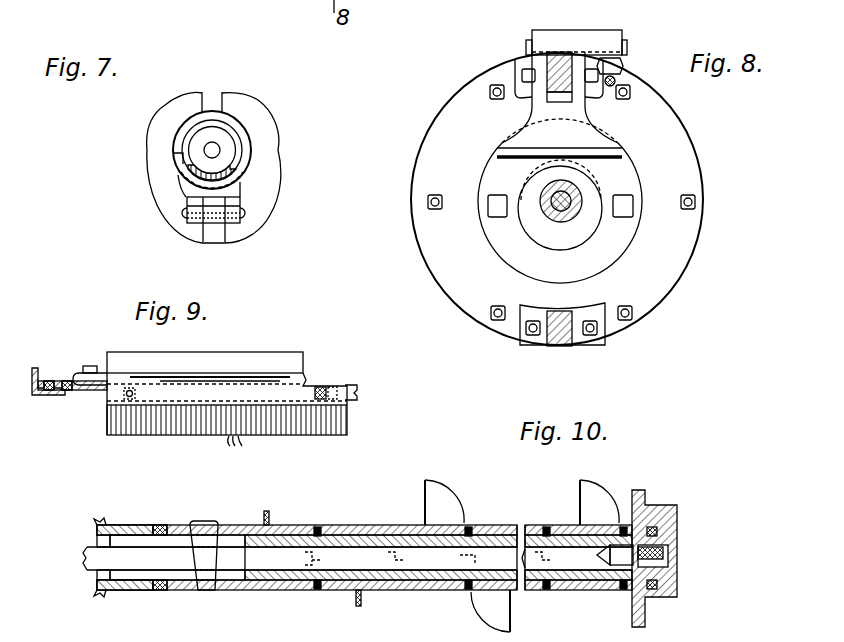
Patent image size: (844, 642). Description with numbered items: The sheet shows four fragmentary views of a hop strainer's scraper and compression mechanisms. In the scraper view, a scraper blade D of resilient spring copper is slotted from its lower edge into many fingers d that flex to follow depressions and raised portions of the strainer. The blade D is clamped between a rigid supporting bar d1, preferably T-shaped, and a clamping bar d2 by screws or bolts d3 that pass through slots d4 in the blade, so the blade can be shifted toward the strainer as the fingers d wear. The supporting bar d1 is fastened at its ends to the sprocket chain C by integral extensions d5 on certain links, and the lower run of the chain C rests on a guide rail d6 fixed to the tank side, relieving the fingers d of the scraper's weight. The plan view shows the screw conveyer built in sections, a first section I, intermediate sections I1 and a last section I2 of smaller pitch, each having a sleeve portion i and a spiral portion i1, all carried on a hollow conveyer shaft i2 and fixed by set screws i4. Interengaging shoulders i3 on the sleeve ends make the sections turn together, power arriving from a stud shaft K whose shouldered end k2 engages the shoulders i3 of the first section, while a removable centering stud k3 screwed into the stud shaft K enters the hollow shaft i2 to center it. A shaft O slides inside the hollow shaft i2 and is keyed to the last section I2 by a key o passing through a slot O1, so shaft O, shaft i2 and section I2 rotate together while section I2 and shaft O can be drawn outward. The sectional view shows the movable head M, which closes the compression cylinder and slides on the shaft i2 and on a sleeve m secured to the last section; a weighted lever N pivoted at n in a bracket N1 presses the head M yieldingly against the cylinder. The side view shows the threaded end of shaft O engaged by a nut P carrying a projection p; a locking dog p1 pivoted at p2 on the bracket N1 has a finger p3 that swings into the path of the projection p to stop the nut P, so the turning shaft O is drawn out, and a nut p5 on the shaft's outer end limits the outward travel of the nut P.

In FIG. 7, the movable head M is at (214, 167).
In FIG. 8, the movable head M is at (560, 201).
In FIG. 10, the movable head M is at (113, 527).
In FIG. 7, the bracket N1 is at (216, 101).
In FIG. 8, the bracket N1 is at (588, 100).
In FIG. 8, the lever N is at (560, 134).
In FIG. 8, the pivot n is at (527, 42).
In FIG. 7, the nut P is at (190, 133).
In FIG. 7, the projection p is at (188, 150).
In FIG. 7, the locking dog p1 is at (193, 200).
In FIG. 7, the pivot p2 is at (244, 213).
In FIG. 7, the finger p3 is at (183, 157).
In FIG. 7, the nut p5 is at (230, 158).
In FIG. 7, the shaft O is at (216, 150).
In FIG. 8, the shaft O is at (546, 212).
In FIG. 10, the shaft O is at (164, 559).
In FIG. 10, the slot O1 is at (165, 580).
In FIG. 10, the key o is at (209, 522).
In FIG. 8, the intermediate conveyer section I1 is at (633, 236).
In FIG. 10, the intermediate conveyer section I1 is at (362, 525).
In FIG. 10, the last conveyer section I2 is at (286, 516).
In FIG. 10, the first conveyer section I is at (612, 507).
In FIG. 10, the sleeve portion i is at (348, 601).
In FIG. 10, the spiral portion i1 is at (522, 556).
In FIG. 8, the conveyer shaft i2 is at (563, 221).
In FIG. 10, the conveyer shaft i2 is at (432, 581).
In FIG. 10, the shoulders i3 is at (312, 581).
In FIG. 10, the set screws i4 is at (318, 526).
In FIG. 10, the stud shaft K is at (678, 545).
In FIG. 10, the shouldered end k2 is at (622, 570).
In FIG. 10, the centering stud k3 is at (600, 557).
In FIG. 9, the sprocket chain C is at (50, 380).
In FIG. 9, the scraper blade D is at (342, 419).
In FIG. 9, the fingers d is at (236, 438).
In FIG. 9, the supporting bar d1 is at (281, 358).
In FIG. 9, the clamping bar d2 is at (359, 393).
In FIG. 9, the screws or bolts d3 is at (131, 392).
In FIG. 9, the slots d4 is at (320, 387).
In FIG. 9, the integral extensions d5 is at (90, 390).
In FIG. 9, the guide rails d6 is at (43, 393).
In FIG. 10, the sleeve m is at (150, 527).